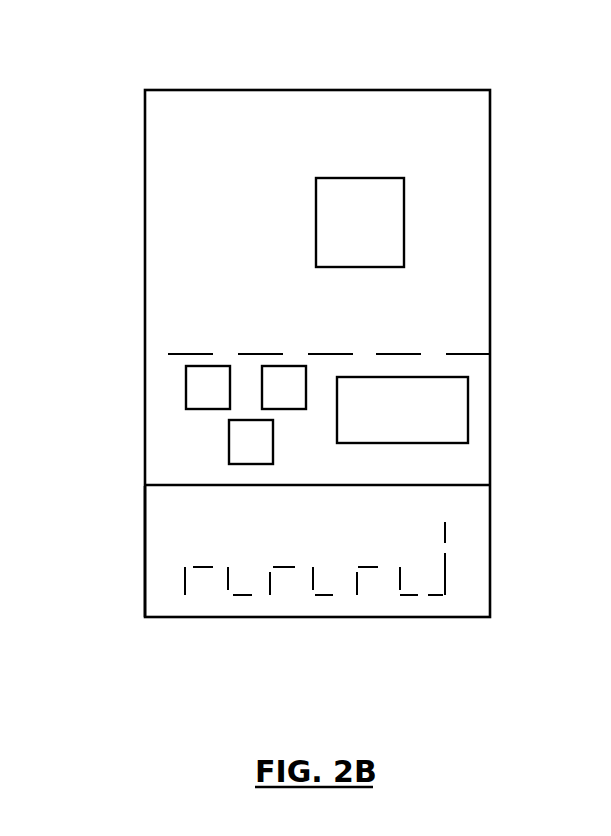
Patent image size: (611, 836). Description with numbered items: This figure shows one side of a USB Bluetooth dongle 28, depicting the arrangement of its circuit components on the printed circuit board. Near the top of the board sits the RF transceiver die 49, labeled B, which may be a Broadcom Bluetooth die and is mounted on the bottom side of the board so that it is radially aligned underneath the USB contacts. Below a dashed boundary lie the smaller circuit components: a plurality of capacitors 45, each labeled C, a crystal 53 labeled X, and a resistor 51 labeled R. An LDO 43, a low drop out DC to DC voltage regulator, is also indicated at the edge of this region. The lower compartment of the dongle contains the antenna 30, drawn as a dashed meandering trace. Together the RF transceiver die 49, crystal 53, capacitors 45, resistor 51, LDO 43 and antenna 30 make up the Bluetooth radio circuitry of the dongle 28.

The USB Bluetooth dongle 28 is at (312, 39).
The RF transceiver die 49 is at (360, 178).
The capacitors 45 is at (210, 364).
The resistor 51 is at (229, 442).
The crystal 53 is at (468, 400).
The LDO 43 is at (145, 508).
The antenna 30 is at (185, 562).